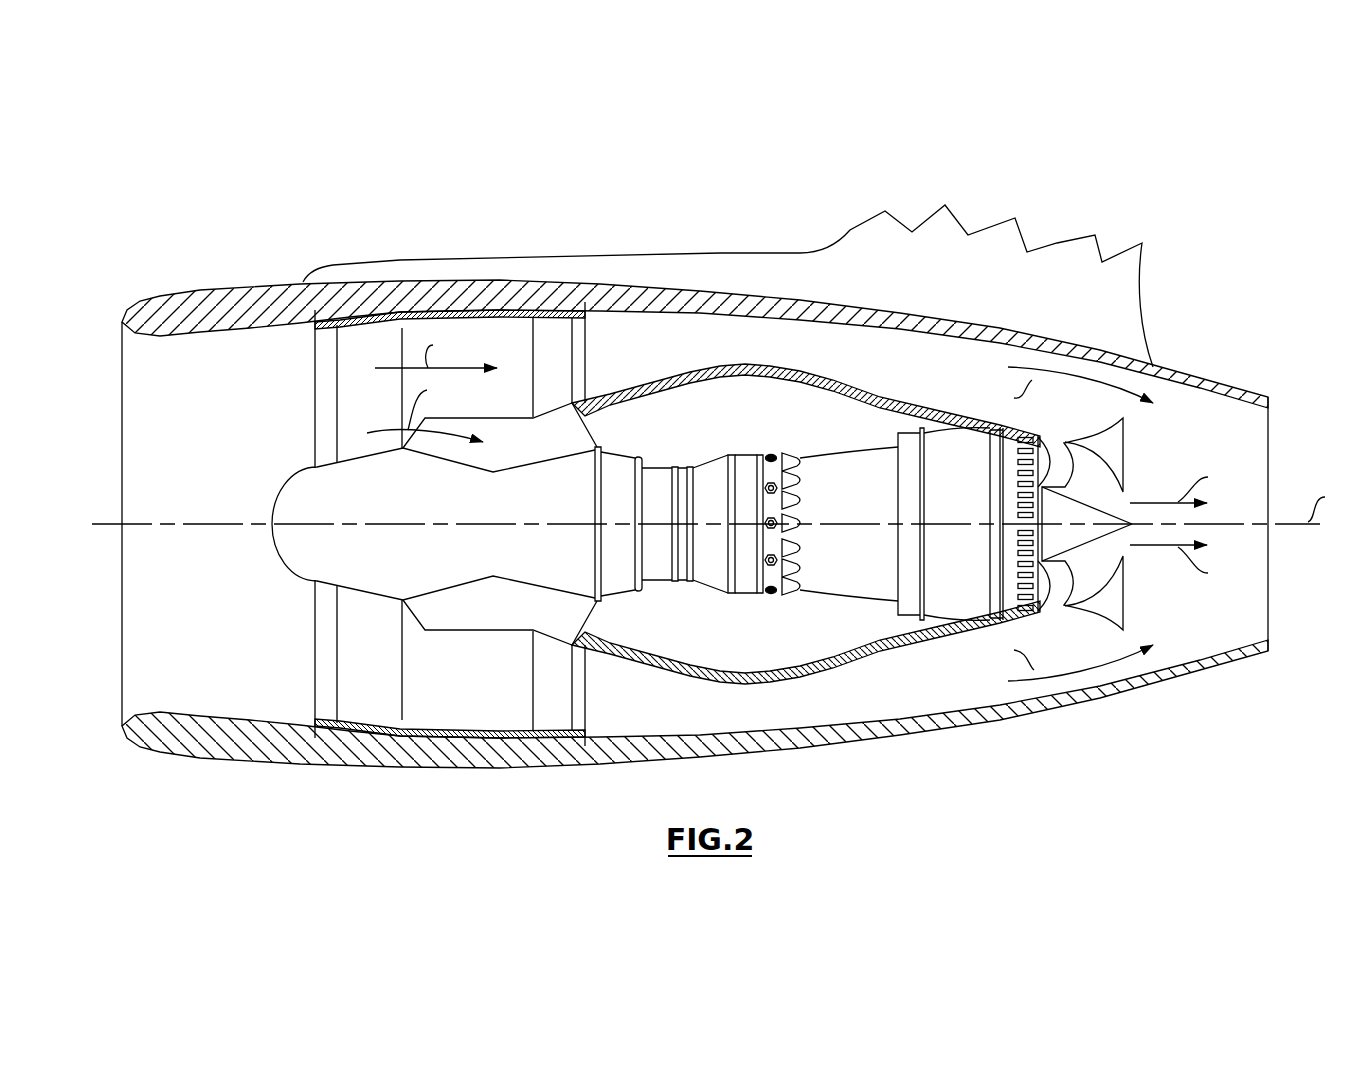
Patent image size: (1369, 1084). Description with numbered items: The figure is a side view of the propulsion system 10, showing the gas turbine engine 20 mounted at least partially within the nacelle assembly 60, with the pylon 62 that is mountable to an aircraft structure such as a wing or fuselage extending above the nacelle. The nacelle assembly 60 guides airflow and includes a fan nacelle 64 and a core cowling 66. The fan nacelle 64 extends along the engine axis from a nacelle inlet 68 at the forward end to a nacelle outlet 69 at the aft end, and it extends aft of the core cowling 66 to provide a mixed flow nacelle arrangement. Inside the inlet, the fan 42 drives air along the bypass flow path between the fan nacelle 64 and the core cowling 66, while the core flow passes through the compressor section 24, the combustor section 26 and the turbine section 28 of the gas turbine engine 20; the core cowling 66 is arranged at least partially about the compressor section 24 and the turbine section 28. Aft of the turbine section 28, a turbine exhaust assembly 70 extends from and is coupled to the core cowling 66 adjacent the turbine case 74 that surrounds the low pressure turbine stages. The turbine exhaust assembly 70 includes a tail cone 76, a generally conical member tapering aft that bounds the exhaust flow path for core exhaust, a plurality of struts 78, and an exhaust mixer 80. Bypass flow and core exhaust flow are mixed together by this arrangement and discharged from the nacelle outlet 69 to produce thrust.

The propulsion system 10 is at (698, 451).
The gas turbine engine 20 is at (886, 492).
The compressor section 24 is at (632, 441).
The combustor section 26 is at (772, 440).
The turbine section 28 is at (890, 432).
The fan 42 is at (355, 412).
The nacelle assembly 60 is at (698, 475).
The pylon 62 is at (953, 222).
The fan nacelle 64 is at (538, 300).
The core cowling 66 is at (772, 371).
The nacelle inlet 68 is at (122, 368).
The nacelle outlet 69 is at (1270, 438).
The turbine exhaust assembly 70 is at (1140, 447).
The turbine case 74 is at (1021, 439).
The tail cone 76 is at (1124, 503).
The struts 78 is at (1067, 468).
The exhaust mixer 80 is at (1125, 458).